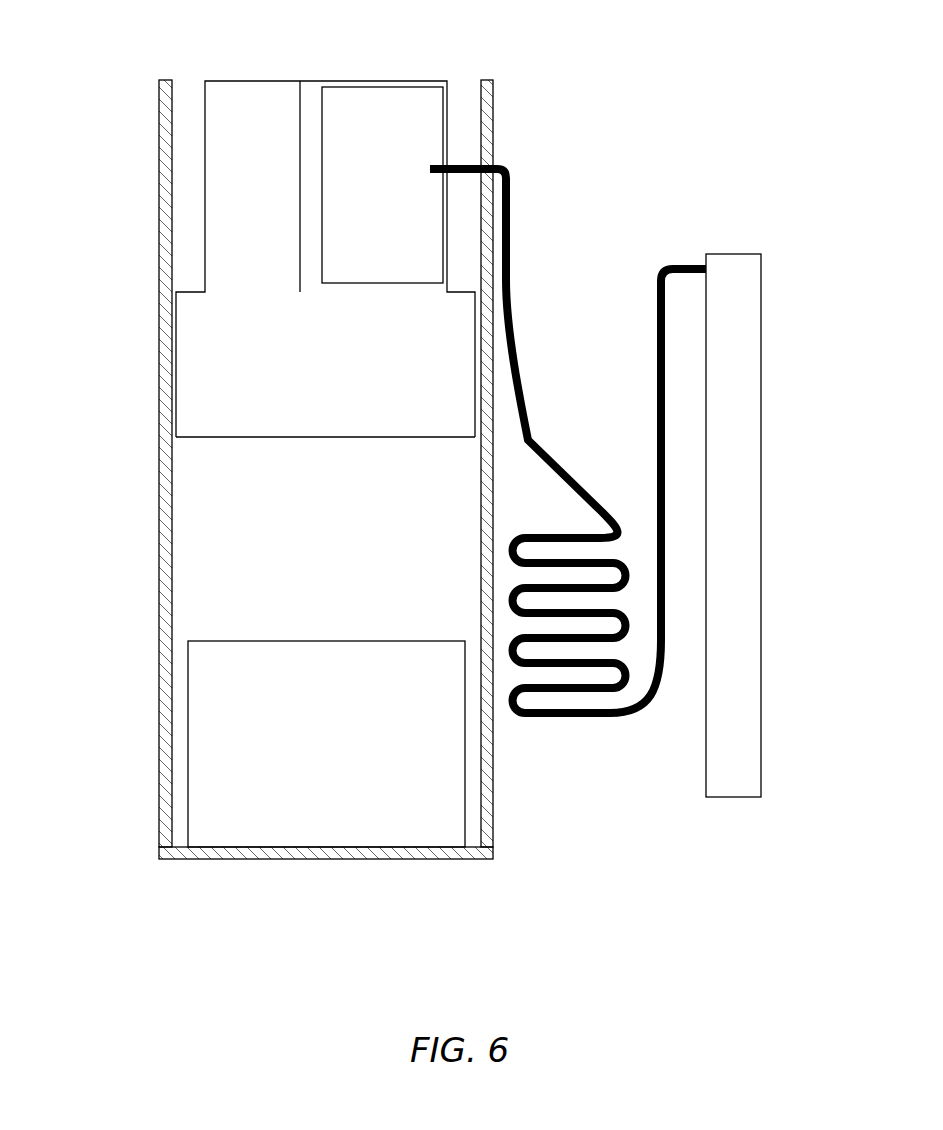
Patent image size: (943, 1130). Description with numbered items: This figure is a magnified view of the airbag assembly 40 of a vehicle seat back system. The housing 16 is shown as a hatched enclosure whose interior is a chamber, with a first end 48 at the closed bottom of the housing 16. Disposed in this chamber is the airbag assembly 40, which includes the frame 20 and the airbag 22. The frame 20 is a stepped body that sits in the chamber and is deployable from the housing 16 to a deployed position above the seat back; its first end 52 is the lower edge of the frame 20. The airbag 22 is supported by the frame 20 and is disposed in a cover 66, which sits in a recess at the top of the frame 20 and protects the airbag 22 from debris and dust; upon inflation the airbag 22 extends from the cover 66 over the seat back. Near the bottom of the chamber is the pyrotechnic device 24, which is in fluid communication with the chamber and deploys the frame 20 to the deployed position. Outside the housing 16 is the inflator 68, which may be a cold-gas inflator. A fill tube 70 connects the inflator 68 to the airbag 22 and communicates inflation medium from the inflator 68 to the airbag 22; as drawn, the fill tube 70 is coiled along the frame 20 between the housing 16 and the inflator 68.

The housing 16 is at (158, 122).
The frame 20 is at (207, 335).
The airbag 22 is at (358, 125).
The pyrotechnic device 24 is at (207, 687).
The airbag assembly 40 is at (72, 200).
The first end 48 is at (221, 861).
The first end 52 is at (255, 440).
The cover 66 is at (427, 80).
The inflator 68 is at (763, 300).
The fill tube 70 is at (538, 443).